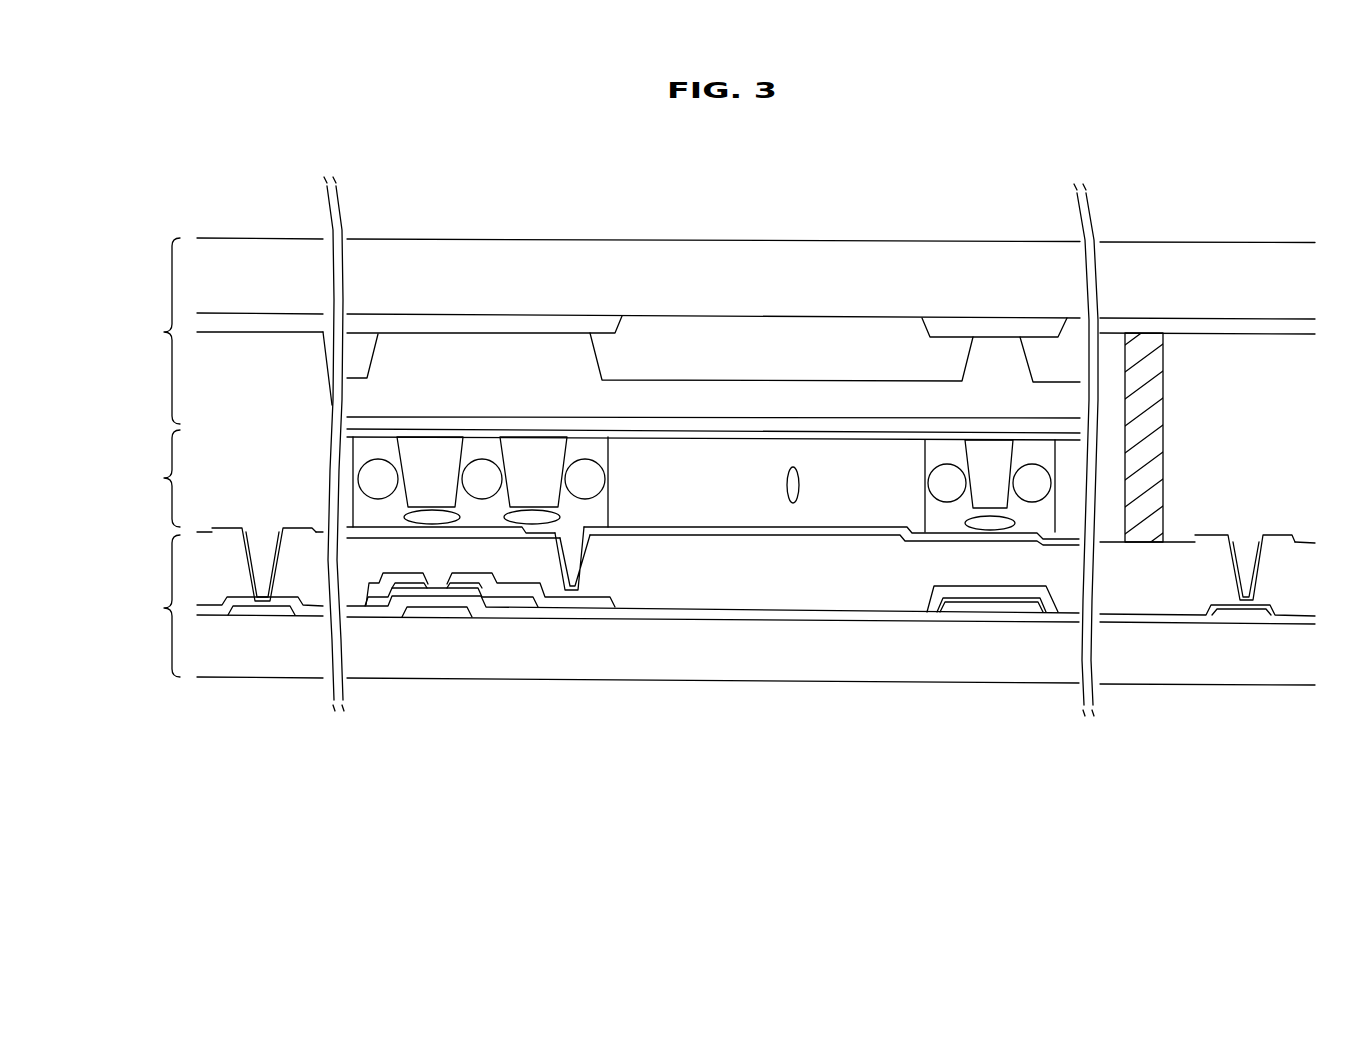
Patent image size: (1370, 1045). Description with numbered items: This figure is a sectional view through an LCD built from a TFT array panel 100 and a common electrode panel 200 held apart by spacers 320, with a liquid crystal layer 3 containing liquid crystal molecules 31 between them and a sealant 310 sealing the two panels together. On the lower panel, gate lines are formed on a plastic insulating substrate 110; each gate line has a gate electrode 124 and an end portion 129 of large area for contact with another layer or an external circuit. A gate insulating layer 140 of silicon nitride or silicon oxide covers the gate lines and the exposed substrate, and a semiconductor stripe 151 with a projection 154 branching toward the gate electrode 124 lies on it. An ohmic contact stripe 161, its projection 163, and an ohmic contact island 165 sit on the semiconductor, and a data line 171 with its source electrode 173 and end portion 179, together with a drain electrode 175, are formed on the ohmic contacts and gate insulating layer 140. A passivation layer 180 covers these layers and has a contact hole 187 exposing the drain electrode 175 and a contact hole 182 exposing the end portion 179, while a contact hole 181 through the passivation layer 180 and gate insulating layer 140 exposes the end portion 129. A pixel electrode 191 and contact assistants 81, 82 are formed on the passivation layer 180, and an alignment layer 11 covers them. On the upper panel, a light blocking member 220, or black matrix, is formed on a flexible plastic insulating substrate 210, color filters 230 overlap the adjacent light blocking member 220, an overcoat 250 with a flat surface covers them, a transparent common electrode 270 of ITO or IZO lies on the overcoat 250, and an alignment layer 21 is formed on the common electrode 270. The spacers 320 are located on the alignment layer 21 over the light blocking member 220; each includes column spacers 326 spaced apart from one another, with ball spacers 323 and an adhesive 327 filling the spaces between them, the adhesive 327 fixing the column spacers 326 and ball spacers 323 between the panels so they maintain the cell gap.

The liquid crystal layer 3 is at (162, 478).
The alignment layer 11 is at (758, 525).
The alignment layer 21 is at (858, 435).
The liquid crystal molecule 31 is at (800, 487).
The contact assistant 81 is at (297, 528).
The contact assistant 82 is at (1280, 532).
The TFT array panel 100 is at (152, 606).
The insulating substrate 110 is at (805, 715).
The gate electrode 124 is at (442, 612).
The end portion 129 is at (267, 612).
The gate insulating layer 140 is at (1173, 715).
The semiconductor stripe 151 is at (990, 608).
The projection 154 is at (388, 598).
The ohmic contact stripe 161 is at (948, 603).
The projection 163 is at (422, 587).
The ohmic contact island 165 is at (507, 597).
The data line 171 is at (1048, 608).
The source electrode 173 is at (373, 590).
The drain electrode 175 is at (490, 597).
The end portion 179 is at (1235, 610).
The passivation layer 180 is at (1298, 715).
The contact hole 181 is at (248, 547).
The contact hole 182 is at (1232, 553).
The contact hole 187 is at (567, 560).
The pixel electrode 191 is at (757, 535).
The common electrode panel 200 is at (152, 331).
The insulating substrate 210 is at (1143, 250).
The light blocking member 220 is at (997, 328).
The color filter 230 is at (345, 748).
The overcoat 250 is at (397, 350).
The common electrode 270 is at (828, 452).
The sealant 310 is at (1163, 368).
The spacer 320 is at (690, 440).
The ball spacer 323 is at (597, 475).
The column spacer 326 is at (560, 442).
The adhesive 327 is at (598, 505).